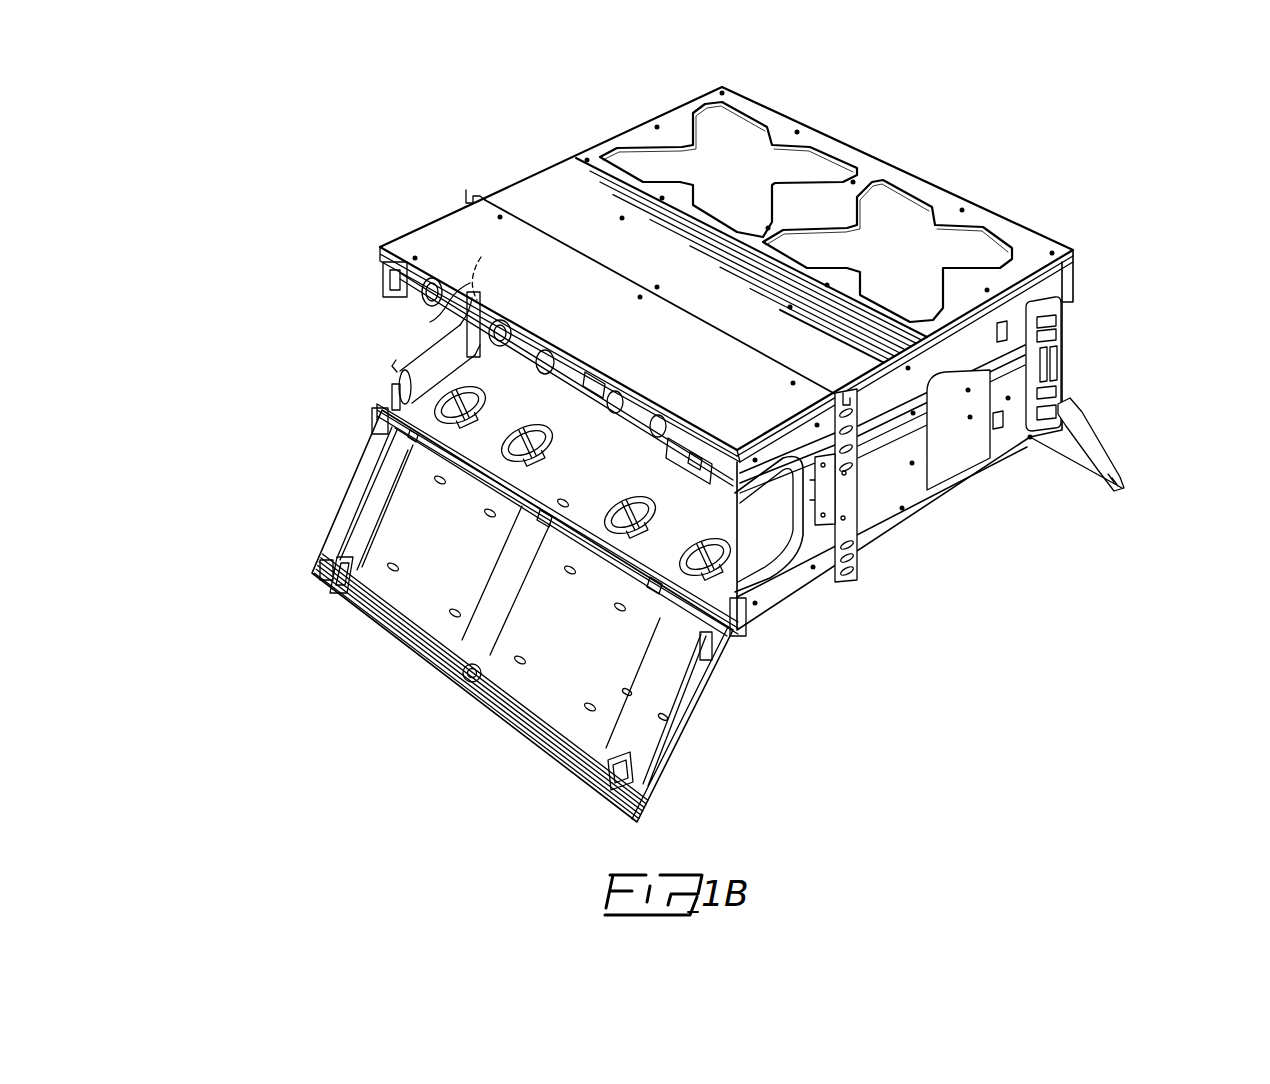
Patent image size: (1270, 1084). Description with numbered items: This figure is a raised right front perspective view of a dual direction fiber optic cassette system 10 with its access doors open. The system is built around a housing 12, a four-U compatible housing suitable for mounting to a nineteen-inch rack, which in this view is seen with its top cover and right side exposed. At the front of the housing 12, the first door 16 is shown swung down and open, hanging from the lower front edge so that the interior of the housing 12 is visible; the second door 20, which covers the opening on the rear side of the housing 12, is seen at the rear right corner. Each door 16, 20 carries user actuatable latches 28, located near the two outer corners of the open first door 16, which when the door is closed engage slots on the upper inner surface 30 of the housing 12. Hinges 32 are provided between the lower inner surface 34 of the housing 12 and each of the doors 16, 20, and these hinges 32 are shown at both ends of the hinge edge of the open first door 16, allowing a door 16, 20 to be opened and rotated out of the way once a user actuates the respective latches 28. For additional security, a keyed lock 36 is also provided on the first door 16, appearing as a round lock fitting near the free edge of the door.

The dual direction fiber optic cassette system 10 is at (706, 388).
The housing 12 is at (543, 168).
The first door 16 is at (462, 641).
The second door 20 is at (1093, 447).
The user actuatable latches 28 is at (313, 580).
The upper inner surface 30 is at (430, 322).
The hinges 32 is at (377, 413).
The lower inner surface 34 is at (505, 385).
The keyed lock 36 is at (453, 682).